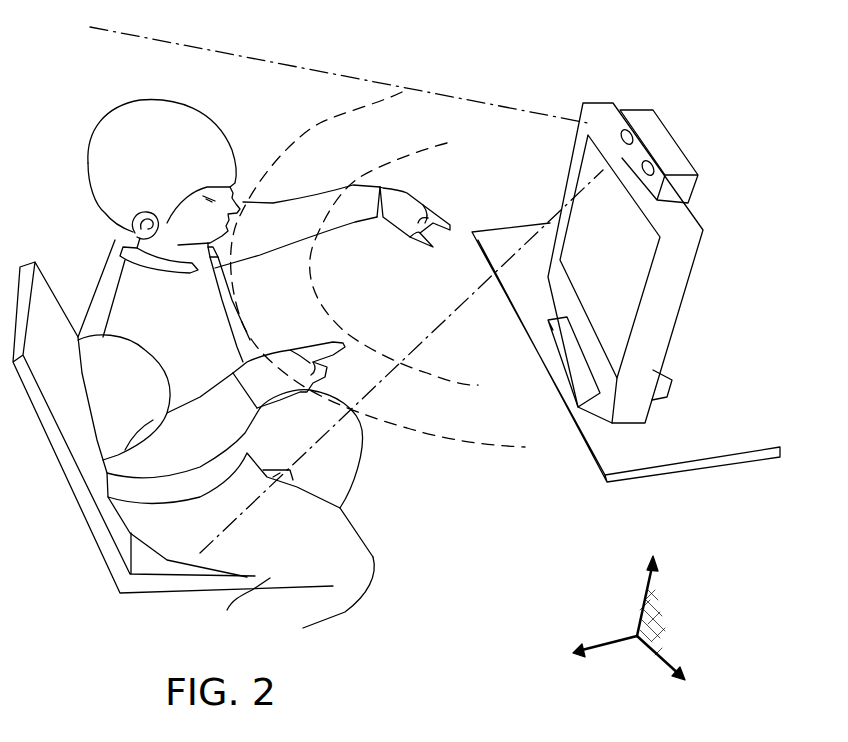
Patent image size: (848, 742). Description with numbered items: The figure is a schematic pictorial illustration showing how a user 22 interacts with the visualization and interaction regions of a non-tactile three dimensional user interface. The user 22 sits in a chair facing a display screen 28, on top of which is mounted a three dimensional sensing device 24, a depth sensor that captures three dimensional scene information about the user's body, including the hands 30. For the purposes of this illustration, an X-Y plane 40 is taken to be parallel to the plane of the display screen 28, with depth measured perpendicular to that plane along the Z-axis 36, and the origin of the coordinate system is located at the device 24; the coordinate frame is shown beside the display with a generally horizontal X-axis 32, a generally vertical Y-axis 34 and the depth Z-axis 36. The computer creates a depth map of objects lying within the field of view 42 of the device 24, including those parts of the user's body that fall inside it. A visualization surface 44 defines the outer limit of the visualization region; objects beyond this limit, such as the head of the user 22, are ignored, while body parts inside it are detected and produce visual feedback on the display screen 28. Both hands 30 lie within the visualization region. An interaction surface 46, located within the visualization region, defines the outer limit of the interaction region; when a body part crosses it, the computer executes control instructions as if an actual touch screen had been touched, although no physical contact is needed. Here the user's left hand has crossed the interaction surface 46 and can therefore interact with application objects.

The user 22 is at (90, 188).
The 3D sensing device 24 is at (645, 113).
The display screen 28 is at (700, 222).
The hands 30 is at (407, 237).
The X-axis 32 is at (670, 680).
The Y-axis 34 is at (648, 588).
The Z-axis 36 is at (603, 647).
The X-Y plane 40 is at (662, 617).
The field of view 42 is at (528, 110).
The visualization surface 44 is at (485, 450).
The interaction surface 46 is at (480, 390).